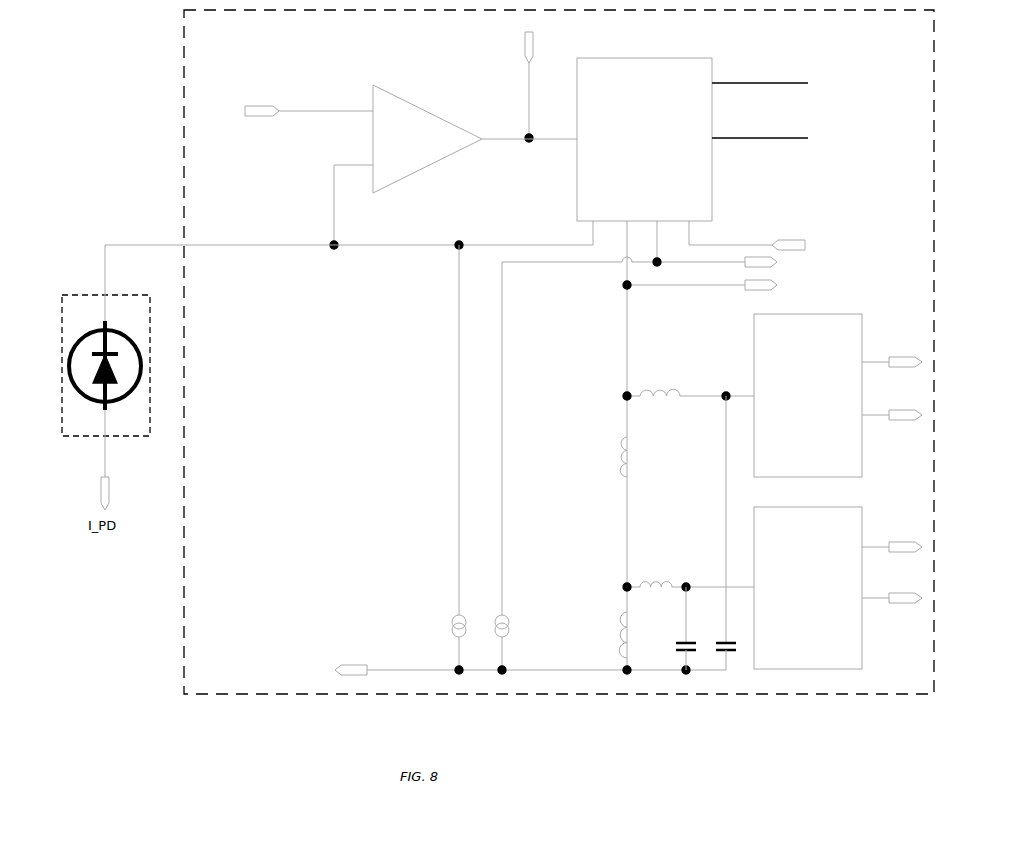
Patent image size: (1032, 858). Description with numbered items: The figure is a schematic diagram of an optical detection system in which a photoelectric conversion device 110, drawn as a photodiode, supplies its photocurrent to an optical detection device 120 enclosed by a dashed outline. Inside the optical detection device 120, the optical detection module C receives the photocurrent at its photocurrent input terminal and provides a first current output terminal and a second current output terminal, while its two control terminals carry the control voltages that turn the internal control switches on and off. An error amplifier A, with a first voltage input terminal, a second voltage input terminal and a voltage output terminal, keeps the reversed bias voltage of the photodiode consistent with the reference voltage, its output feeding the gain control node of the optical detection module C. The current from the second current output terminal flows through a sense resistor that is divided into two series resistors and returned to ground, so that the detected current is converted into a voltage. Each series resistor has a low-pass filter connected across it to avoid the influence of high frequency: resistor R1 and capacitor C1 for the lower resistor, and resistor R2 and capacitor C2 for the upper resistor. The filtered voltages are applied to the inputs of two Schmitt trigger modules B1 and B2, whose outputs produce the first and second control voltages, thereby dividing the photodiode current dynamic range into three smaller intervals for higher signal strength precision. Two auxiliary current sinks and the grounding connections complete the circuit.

The photoelectric conversion device 110 is at (62, 370).
The optical detection device 120 is at (934, 138).
The error amplifier A is at (427, 139).
The optical detection module C is at (644, 139).
The trigger module B1 is at (808, 588).
The trigger module B2 is at (808, 395).
The resistor R1 is at (690, 575).
The resistor R2 is at (690, 383).
The capacitor C1 is at (673, 628).
The capacitor C2 is at (731, 533).